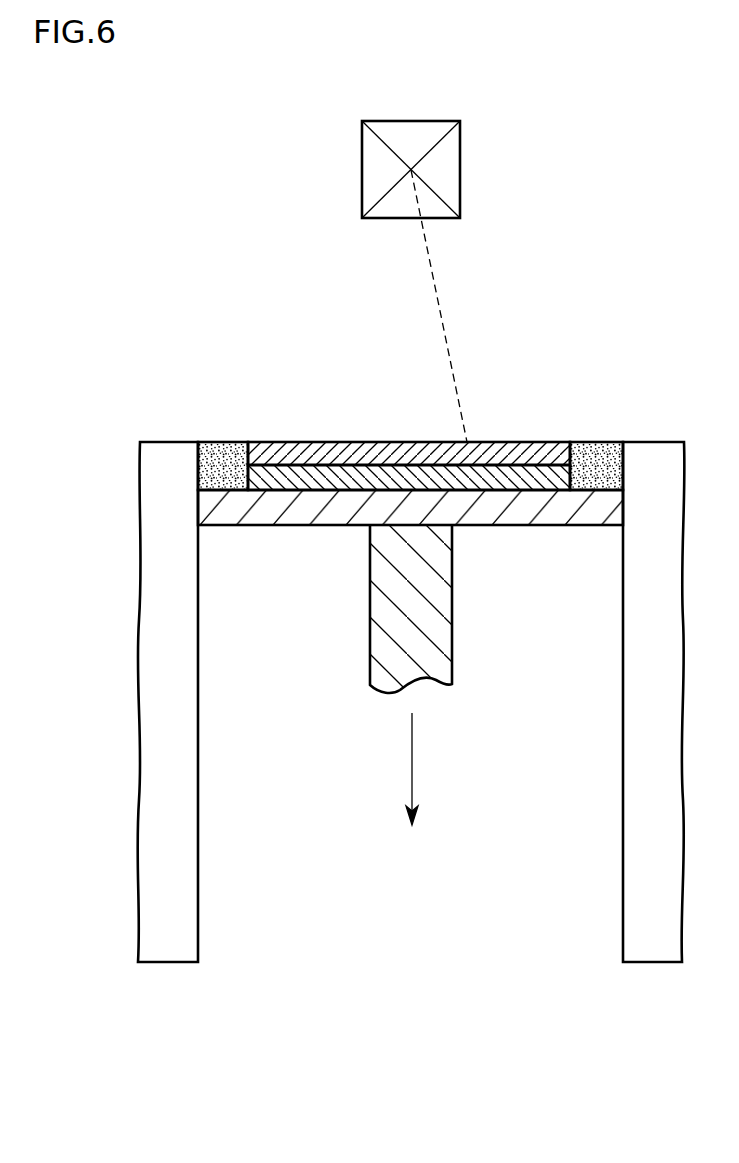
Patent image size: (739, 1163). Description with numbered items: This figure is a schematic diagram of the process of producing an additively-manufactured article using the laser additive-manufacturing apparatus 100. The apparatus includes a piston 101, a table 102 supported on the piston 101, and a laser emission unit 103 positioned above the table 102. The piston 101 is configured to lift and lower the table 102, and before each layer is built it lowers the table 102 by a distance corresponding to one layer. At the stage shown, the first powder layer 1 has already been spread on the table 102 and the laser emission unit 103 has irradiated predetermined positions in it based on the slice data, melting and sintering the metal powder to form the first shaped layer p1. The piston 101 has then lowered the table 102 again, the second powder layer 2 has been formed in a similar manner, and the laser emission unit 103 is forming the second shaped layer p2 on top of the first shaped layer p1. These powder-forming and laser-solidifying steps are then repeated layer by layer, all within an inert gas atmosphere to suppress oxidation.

The laser additive-manufacturing apparatus 100 is at (136, 173).
The piston 101 is at (390, 615).
The table 102 is at (514, 512).
The laser emission unit 103 is at (445, 168).
The first powder layer 1 is at (221, 480).
The second powder layer 2 is at (605, 455).
The first shaped layer p1 is at (378, 477).
The second shaped layer p2 is at (425, 455).